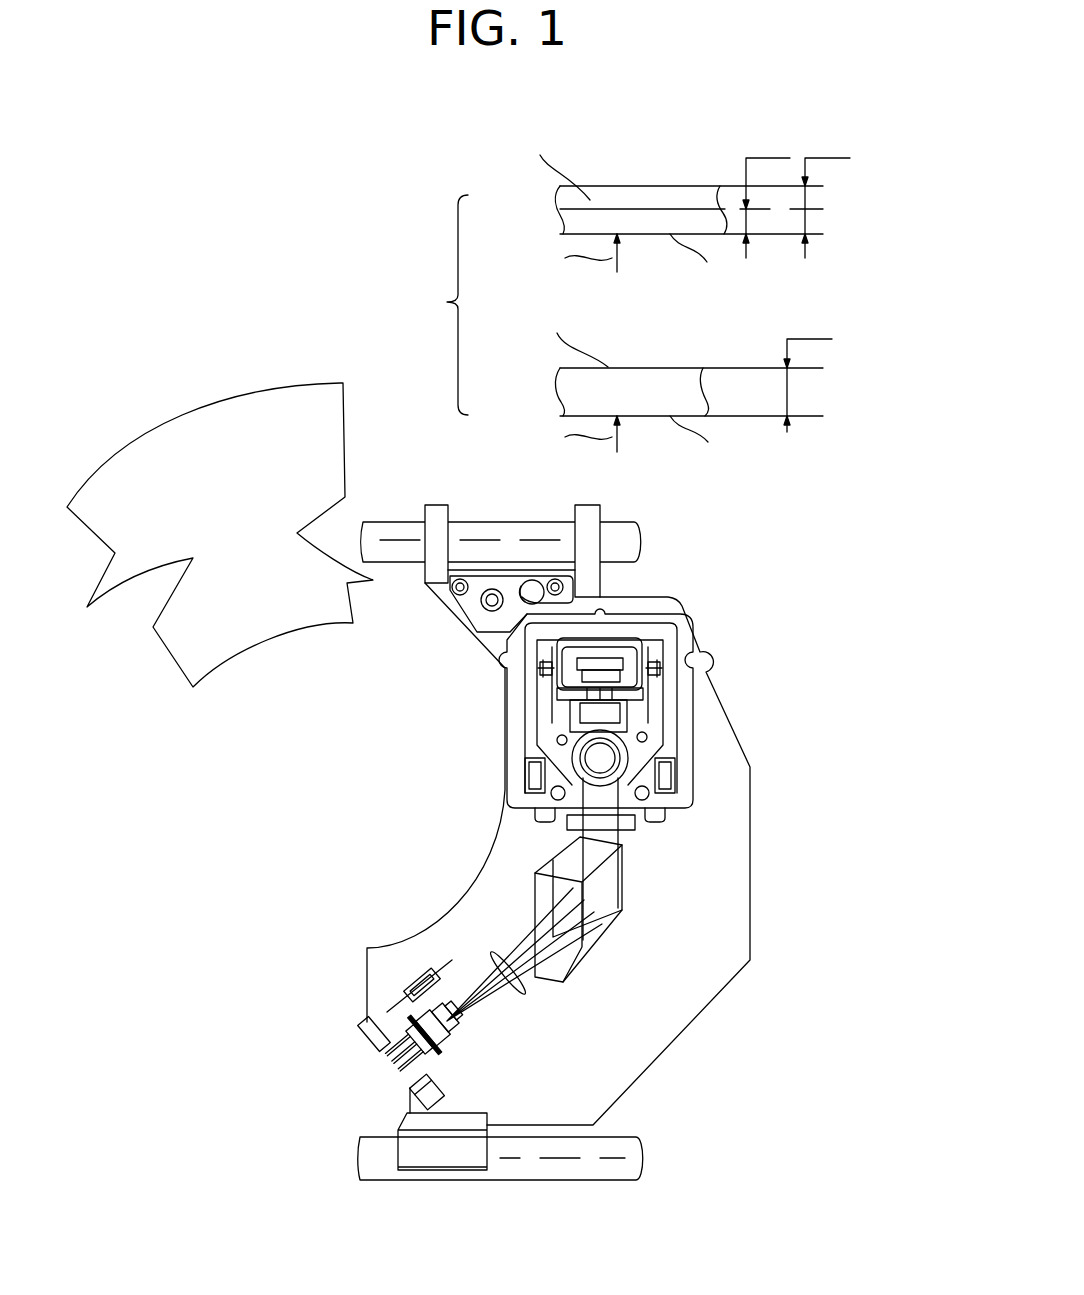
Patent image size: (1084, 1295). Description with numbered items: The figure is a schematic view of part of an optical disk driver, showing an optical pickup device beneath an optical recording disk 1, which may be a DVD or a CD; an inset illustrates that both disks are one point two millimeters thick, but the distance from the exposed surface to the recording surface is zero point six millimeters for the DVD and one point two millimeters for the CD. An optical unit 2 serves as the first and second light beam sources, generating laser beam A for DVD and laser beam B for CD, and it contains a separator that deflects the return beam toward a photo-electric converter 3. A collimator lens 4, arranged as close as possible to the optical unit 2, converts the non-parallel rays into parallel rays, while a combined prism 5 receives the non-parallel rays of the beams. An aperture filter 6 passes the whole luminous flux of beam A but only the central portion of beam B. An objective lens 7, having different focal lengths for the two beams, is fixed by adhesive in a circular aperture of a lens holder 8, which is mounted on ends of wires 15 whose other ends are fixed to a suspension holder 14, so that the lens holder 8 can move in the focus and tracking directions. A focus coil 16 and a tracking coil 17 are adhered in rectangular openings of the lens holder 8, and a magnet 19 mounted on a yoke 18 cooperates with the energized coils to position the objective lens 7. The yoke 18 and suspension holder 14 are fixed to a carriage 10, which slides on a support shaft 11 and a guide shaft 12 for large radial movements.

The optical recording disk 1 is at (345, 412).
The optical unit 2 is at (368, 1030).
The photo-electric converter 3 is at (413, 980).
The collimator lens 4 is at (493, 957).
The combined prism 5 is at (533, 868).
The aperture filter 6 is at (567, 823).
The objective lens 7 is at (572, 755).
The lens holder 8 is at (642, 725).
The carriage 10 is at (697, 1020).
The support shaft 11 is at (640, 522).
The guide shaft 12 is at (642, 1170).
The suspension holder 14 is at (687, 793).
The wires 15 is at (530, 705).
The focus coil 16 is at (613, 645).
The tracking coil 17 is at (638, 693).
The yoke 18 is at (623, 663).
The magnet 19 is at (623, 675).